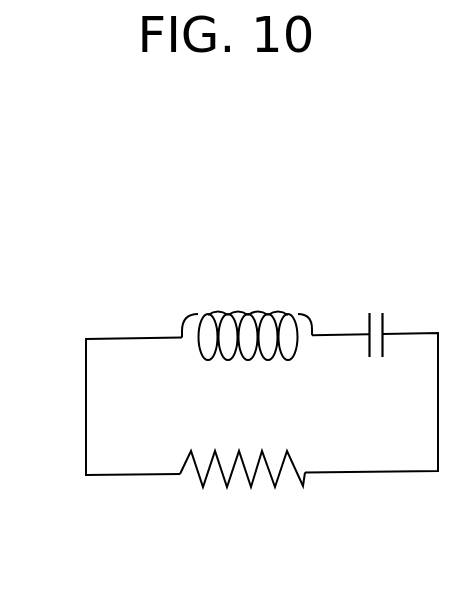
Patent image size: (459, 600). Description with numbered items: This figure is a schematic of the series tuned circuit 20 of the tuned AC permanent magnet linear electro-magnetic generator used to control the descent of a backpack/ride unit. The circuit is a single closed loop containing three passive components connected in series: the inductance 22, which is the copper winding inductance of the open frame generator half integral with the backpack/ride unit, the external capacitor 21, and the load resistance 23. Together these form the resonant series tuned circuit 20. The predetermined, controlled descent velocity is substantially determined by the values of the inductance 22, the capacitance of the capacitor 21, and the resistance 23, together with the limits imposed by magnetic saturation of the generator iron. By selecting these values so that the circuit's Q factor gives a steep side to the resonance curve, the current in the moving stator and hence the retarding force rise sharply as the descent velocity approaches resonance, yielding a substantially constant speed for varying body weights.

The series tuned circuit 20 is at (85, 425).
The capacitor 21 is at (369, 325).
The inductance 22 is at (212, 318).
The load resistance 23 is at (277, 478).